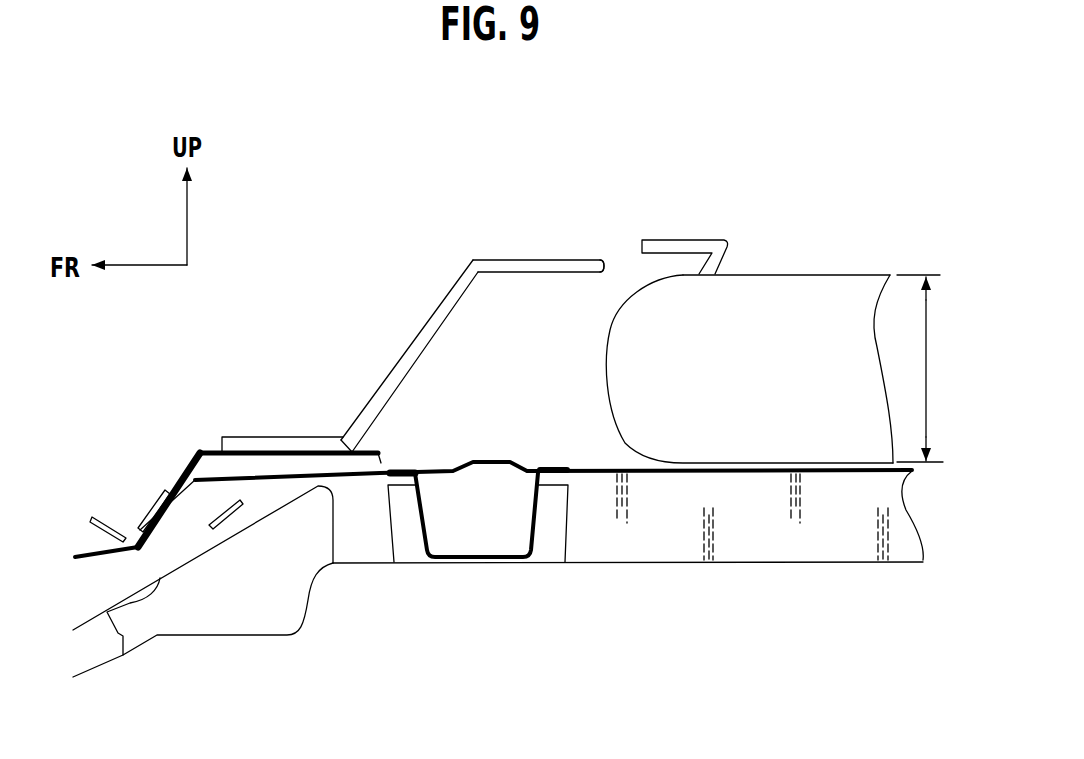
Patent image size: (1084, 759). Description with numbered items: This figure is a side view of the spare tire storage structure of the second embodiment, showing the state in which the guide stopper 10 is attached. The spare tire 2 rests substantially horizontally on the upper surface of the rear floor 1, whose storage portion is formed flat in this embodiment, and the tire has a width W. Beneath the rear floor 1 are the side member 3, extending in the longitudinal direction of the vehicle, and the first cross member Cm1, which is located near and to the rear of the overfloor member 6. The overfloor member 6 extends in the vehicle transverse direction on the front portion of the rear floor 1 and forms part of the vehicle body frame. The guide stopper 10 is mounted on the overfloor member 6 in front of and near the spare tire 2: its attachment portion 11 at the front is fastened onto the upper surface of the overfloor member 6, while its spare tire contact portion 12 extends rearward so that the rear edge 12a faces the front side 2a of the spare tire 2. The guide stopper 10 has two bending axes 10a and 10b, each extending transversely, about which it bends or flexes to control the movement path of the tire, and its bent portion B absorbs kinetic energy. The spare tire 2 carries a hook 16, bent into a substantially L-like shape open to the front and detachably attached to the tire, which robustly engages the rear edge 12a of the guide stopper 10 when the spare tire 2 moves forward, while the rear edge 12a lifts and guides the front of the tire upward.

The rear floor 1 is at (633, 467).
The spare tire 2 is at (780, 298).
The front side of spare tire 2a is at (613, 328).
The side member 3 is at (792, 547).
The overfloor member 6 is at (213, 448).
The guide stopper 10 is at (434, 281).
The bending axis 10a is at (343, 437).
The bending axis 10b is at (478, 273).
The attachment portion 11 is at (267, 437).
The spare tire contact portion 12 is at (553, 258).
The rear edge of spare tire contact portion 12a is at (605, 266).
The hook 16 is at (678, 238).
The first cross member Cm1 is at (425, 528).
The bent portion B is at (347, 408).
The width of spare tire W is at (927, 368).